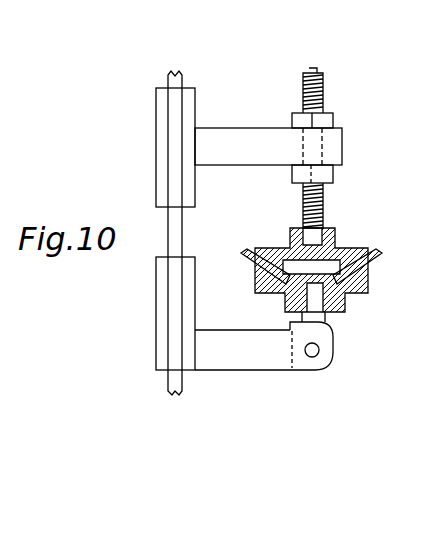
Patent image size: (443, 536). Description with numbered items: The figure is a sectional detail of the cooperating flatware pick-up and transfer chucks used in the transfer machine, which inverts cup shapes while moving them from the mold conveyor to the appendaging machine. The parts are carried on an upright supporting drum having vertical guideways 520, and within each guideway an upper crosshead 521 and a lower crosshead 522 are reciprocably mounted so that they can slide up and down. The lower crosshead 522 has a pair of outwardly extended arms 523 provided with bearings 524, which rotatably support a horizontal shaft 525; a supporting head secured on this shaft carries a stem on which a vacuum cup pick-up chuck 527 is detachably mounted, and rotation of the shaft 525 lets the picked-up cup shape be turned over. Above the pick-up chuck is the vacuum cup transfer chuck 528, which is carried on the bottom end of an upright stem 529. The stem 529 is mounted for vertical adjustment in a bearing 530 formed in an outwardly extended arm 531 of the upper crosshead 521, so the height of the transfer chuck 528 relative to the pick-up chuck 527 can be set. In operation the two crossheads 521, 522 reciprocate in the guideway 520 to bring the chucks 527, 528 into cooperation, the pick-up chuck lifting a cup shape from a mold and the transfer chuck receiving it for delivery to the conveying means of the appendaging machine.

The vertical guideway 520 is at (166, 208).
The upper crosshead 521 is at (159, 157).
The lower crosshead 522 is at (159, 295).
The outwardly extended arm 523 is at (247, 371).
The bearing 524 is at (312, 372).
The horizontal shaft 525 is at (313, 350).
The vacuum cup pick-up chuck 527 is at (368, 296).
The vacuum cup transfer chuck 528 is at (339, 262).
The upright stem 529 is at (323, 100).
The bearing 530 is at (334, 154).
The outwardly extended arm 531 is at (236, 140).